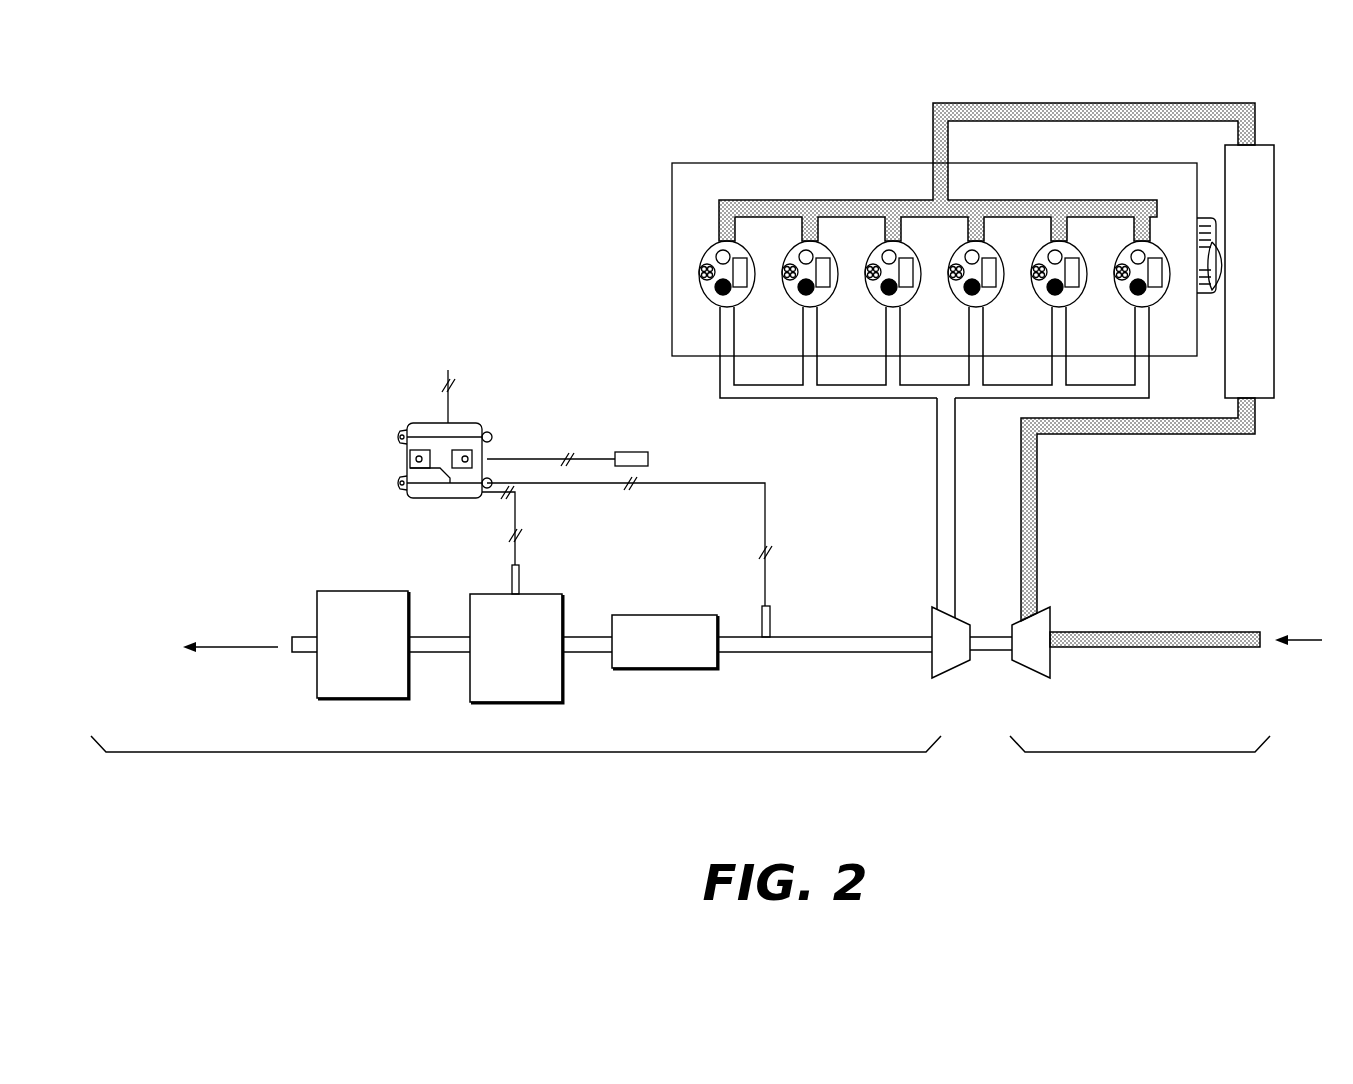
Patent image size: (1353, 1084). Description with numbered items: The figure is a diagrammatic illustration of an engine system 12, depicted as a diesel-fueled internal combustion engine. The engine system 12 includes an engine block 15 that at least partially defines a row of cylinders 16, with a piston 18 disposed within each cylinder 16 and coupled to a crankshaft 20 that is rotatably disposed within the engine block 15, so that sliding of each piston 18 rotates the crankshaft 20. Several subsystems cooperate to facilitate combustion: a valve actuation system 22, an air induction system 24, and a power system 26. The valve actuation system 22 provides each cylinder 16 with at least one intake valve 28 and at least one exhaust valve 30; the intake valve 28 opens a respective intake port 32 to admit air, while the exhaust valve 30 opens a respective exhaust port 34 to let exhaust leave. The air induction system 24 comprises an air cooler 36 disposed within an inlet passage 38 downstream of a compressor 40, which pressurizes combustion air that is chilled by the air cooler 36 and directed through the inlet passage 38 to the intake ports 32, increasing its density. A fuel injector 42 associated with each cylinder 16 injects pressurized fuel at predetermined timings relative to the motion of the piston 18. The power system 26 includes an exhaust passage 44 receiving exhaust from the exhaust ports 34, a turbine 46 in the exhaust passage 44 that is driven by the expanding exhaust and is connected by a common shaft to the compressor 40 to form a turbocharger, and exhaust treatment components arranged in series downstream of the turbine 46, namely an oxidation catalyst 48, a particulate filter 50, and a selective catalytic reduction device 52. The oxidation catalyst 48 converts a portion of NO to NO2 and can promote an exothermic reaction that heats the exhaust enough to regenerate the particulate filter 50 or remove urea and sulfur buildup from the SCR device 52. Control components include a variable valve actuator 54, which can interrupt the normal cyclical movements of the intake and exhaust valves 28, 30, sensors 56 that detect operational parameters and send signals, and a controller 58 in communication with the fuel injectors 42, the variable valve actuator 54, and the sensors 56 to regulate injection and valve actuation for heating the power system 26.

The engine system 12 is at (228, 281).
The engine block 15 is at (676, 203).
The cylinder 16 is at (758, 269).
The piston 18 is at (740, 298).
The crankshaft 20 is at (1203, 218).
The valve actuation system 22 is at (747, 236).
The air induction system 24 is at (1148, 752).
The power system 26 is at (548, 752).
The intake valve 28 is at (716, 257).
The exhaust valve 30 is at (718, 290).
The intake port 32 is at (722, 218).
The exhaust port 34 is at (728, 328).
The air cooler 36 is at (1260, 280).
The inlet passage 38 is at (1128, 434).
The compressor 40 is at (1052, 622).
The fuel injector 42 is at (705, 275).
The exhaust passage 44 is at (937, 520).
The turbine 46 is at (930, 637).
The oxidation catalyst 48 is at (673, 615).
The particulate filter 50 is at (474, 594).
The selective catalytic reduction device 52 is at (350, 591).
The variable valve actuator 54 is at (742, 278).
The sensor 56 is at (650, 462).
The controller 58 is at (420, 423).